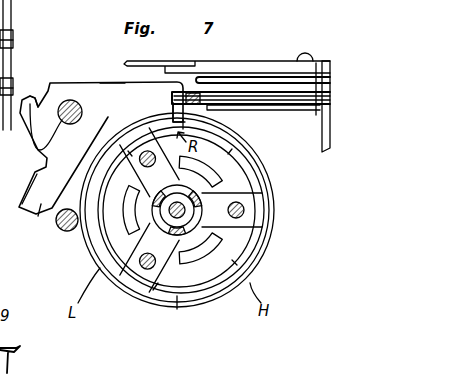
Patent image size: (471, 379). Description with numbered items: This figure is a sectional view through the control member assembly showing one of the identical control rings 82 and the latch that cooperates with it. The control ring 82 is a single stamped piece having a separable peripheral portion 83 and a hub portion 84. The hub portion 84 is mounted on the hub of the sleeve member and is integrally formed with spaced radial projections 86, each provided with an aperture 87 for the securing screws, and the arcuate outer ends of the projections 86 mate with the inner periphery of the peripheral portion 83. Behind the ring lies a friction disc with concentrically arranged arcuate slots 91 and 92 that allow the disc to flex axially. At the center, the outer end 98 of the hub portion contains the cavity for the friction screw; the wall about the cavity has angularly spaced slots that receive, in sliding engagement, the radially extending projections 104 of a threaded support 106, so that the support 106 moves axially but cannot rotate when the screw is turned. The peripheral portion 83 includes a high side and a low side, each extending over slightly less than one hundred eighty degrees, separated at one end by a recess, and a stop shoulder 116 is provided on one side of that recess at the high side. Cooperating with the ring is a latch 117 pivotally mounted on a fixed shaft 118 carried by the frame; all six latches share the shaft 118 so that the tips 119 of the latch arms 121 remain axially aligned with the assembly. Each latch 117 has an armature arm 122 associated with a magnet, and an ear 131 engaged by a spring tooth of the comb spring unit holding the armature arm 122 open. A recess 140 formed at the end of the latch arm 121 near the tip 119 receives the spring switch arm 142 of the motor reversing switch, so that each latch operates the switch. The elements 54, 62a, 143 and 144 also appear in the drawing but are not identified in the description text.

The rod 54 is at (11, 37).
The bracket 62a is at (13, 45).
The latch 117 is at (74, 83).
The ear 131 is at (30, 100).
The latch arm 121 is at (112, 85).
The fixed shaft 118 is at (22, 176).
The armature arm 122 is at (39, 212).
The tip 119 is at (173, 117).
The recess 140 is at (184, 99).
The spring switch arm 142 is at (250, 93).
The plate 143 is at (202, 79).
The lower plate 144 is at (246, 106).
The control ring 82 is at (267, 161).
The peripheral portion 83 is at (177, 300).
The arcuate slot 92 is at (246, 243).
The hub portion 84 is at (175, 268).
The stop shoulder 116 is at (190, 122).
The aperture 87 is at (245, 209).
The arcuate slot 91 is at (108, 235).
The radial projection 86 is at (132, 196).
The radially extending projection 104 is at (168, 227).
The threaded support 106 is at (132, 165).
The outer end of hub portion 98 is at (193, 184).